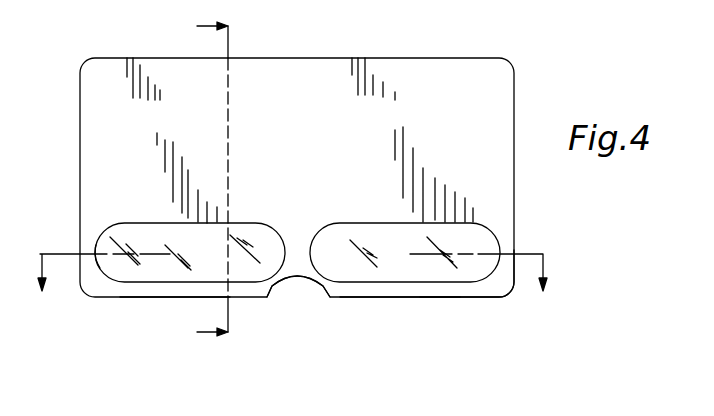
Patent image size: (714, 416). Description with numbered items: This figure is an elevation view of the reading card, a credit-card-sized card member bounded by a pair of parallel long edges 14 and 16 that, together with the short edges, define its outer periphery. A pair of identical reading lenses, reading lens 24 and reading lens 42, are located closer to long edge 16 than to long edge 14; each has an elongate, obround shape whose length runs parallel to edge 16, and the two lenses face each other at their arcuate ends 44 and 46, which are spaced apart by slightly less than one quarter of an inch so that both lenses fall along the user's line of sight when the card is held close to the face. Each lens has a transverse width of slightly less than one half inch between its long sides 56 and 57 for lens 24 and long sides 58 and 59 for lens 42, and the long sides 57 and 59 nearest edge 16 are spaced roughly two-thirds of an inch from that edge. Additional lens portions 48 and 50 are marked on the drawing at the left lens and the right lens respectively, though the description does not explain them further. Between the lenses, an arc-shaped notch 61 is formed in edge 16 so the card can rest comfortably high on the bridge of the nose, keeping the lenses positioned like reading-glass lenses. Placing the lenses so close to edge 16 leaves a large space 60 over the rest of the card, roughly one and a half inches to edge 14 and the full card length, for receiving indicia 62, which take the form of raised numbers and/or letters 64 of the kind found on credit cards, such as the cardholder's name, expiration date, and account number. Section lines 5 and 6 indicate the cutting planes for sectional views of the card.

The section line 5- 5 is at (291, 264).
The section line 6- 6 is at (225, 178).
The long edge 14 is at (420, 58).
The long edge 16 is at (498, 297).
The reading lens 24 is at (138, 272).
The reading lens 42 is at (436, 272).
The arcuate end 44 is at (284, 236).
The arcuate end 46 is at (310, 236).
The lens end wall 48 is at (100, 268).
The lens housing 50 is at (497, 233).
The long side 56 is at (168, 285).
The long side 57 is at (142, 222).
The long side 58 is at (407, 290).
The long side 59 is at (416, 240).
The space 60 is at (370, 178).
The notch 61 is at (291, 287).
The indicia 62 is at (462, 92).
The raised numbers and/or letters 64 is at (110, 114).